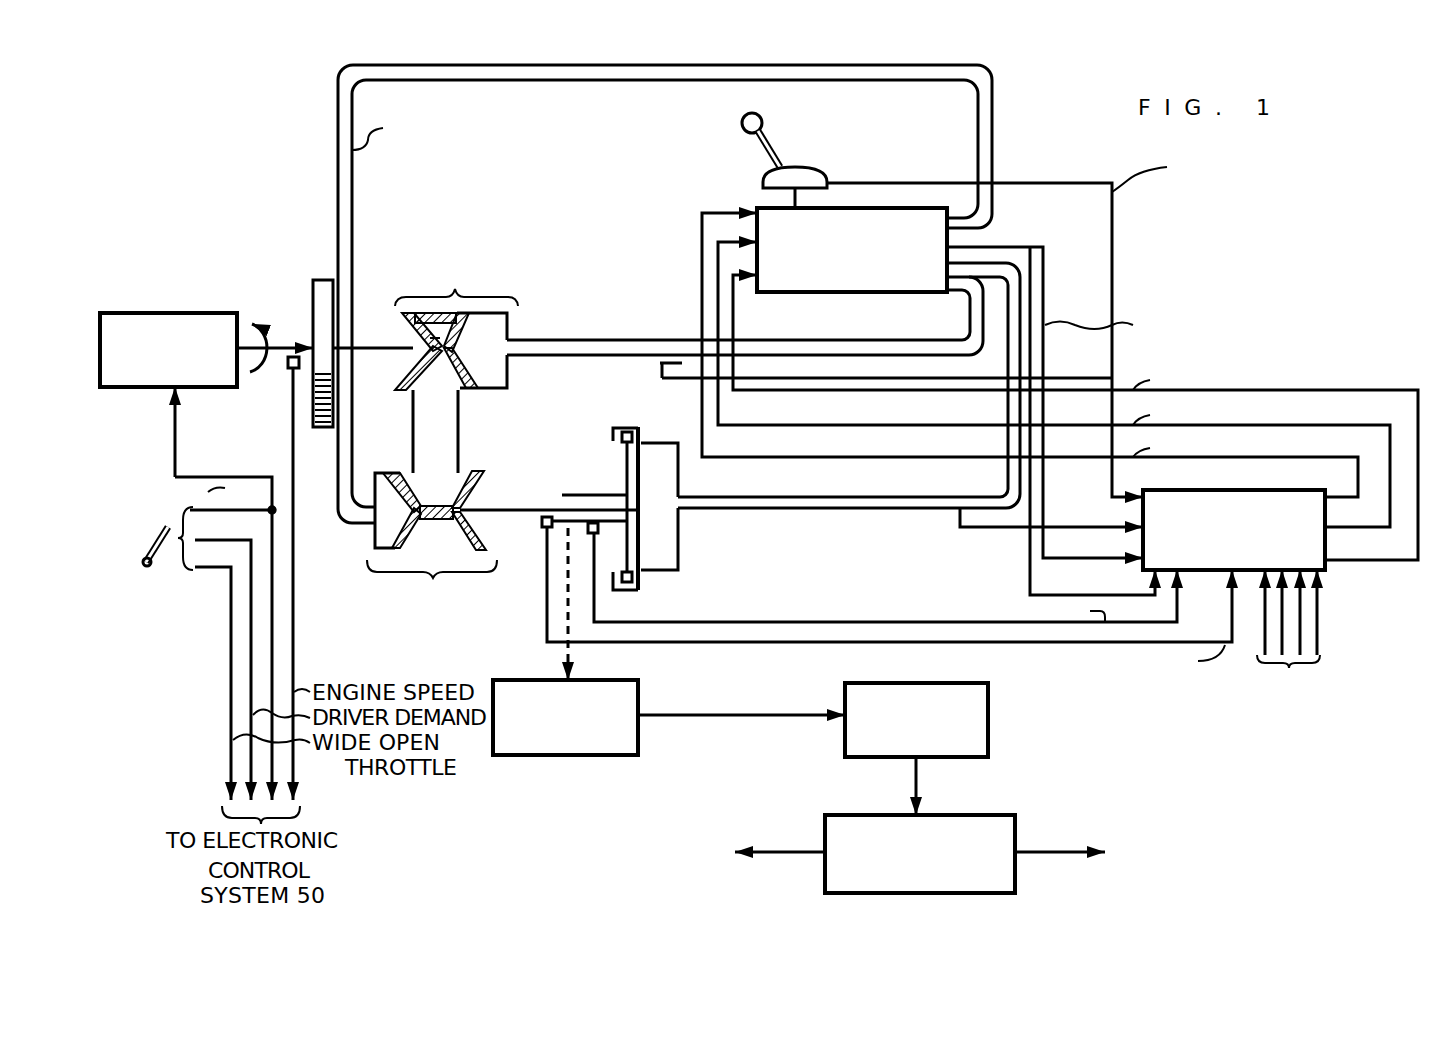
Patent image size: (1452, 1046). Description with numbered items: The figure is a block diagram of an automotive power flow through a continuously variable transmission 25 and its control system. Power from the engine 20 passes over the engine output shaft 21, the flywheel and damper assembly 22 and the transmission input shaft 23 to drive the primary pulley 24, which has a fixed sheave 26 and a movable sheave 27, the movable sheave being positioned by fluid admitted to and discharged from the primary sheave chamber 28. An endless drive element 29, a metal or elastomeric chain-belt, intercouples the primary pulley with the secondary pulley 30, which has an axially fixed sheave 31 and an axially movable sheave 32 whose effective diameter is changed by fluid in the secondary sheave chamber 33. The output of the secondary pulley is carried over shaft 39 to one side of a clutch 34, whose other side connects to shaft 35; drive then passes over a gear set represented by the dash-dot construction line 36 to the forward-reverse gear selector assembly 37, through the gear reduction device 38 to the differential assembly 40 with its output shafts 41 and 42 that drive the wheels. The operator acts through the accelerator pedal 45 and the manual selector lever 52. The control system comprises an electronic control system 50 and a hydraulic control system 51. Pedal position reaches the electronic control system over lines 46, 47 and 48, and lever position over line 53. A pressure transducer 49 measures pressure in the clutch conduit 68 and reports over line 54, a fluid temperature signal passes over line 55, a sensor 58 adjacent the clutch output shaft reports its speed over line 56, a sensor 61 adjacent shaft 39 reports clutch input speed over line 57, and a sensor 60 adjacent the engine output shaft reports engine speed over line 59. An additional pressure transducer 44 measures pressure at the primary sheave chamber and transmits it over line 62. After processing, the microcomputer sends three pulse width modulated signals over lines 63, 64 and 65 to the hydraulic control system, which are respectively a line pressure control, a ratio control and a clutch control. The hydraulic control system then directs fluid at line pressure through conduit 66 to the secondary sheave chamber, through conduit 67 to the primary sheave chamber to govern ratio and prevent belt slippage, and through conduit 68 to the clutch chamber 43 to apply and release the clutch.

The engine 20 is at (153, 313).
The engine output shaft 21 is at (284, 340).
The flywheel and damper assembly 22 is at (313, 290).
The transmission input shaft 23 is at (376, 350).
The primary pulley 24 is at (456, 325).
The continuously variable transmission 25 is at (515, 445).
The fixed sheave 26 is at (397, 318).
The movable sheave 27 is at (485, 392).
The primary sheave chamber 28 is at (519, 317).
The endless drive element 29 is at (411, 418).
The secondary pulley 30 is at (432, 539).
The axially fixed sheave 31 is at (490, 548).
The axially movable sheave 32 is at (385, 472).
The secondary sheave chamber 33 is at (362, 540).
The clutch 34 is at (636, 420).
The shaft 35 is at (608, 495).
The gear set 36 is at (569, 600).
The forward-reverse gear selector assembly 37 is at (612, 680).
The gear reduction device 38 is at (990, 720).
The shaft 39 is at (527, 510).
The differential assembly 40 is at (823, 878).
The output shaft 41 is at (1030, 850).
The output shaft 42 is at (805, 850).
The clutch chamber 43 is at (667, 551).
The pressure transducer 44 is at (660, 368).
The accelerator pedal 45 is at (151, 530).
The line 46 is at (177, 446).
The line 47 is at (245, 538).
The line 48 is at (232, 565).
The pressure transducer 49 is at (963, 517).
The electronic control system 50 is at (1250, 489).
The hydraulic control system 51 is at (853, 294).
The manual selector lever 52 is at (773, 140).
The line 53 is at (1115, 298).
The line 54 is at (1072, 527).
The line 55 is at (1046, 270).
The line 56 is at (738, 618).
The line 57 is at (878, 645).
The sensor 58 is at (598, 528).
The line 59 is at (291, 445).
The sensor 60 is at (290, 370).
The sensor 61 is at (541, 523).
The line 62 is at (677, 380).
The line 63 is at (1388, 466).
The line 64 is at (1339, 502).
The line 65 is at (1418, 541).
The conduit 66 is at (663, 65).
The conduit 67 is at (968, 318).
The conduit 68 is at (740, 496).